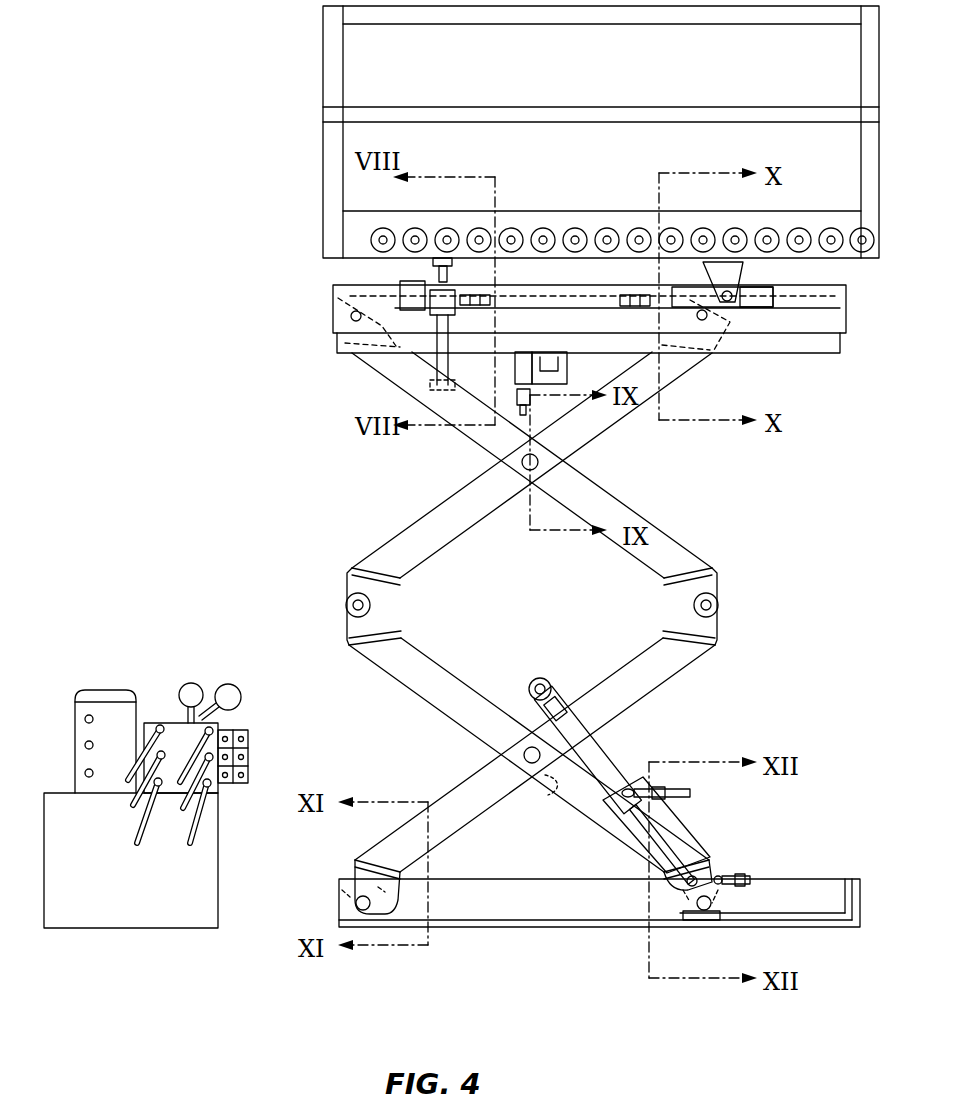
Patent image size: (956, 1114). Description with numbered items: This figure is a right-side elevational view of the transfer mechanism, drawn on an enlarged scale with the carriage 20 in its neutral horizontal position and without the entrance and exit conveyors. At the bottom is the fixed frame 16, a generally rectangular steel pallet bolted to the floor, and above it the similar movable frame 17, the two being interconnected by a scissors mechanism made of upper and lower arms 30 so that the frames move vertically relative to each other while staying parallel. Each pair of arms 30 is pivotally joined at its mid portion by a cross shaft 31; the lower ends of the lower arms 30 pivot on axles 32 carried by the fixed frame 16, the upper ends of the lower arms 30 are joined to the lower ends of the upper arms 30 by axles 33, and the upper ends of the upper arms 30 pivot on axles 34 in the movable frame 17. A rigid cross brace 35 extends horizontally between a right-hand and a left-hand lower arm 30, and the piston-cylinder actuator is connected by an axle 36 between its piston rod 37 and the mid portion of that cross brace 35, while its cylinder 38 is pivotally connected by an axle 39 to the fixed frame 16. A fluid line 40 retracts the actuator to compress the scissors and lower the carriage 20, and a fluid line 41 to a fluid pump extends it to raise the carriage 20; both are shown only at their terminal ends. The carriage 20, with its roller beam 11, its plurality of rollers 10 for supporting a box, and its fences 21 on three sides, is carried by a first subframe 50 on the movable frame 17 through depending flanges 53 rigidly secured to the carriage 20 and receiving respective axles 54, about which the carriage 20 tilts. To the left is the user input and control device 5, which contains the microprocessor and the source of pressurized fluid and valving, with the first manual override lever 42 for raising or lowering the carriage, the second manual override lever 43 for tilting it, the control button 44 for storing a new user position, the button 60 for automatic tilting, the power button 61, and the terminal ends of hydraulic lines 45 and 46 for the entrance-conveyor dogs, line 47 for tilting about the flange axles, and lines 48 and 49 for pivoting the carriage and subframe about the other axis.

The user input and control device 5 is at (46, 690).
The rollers 10 is at (546, 232).
The roller beam 11 is at (500, 212).
The fixed frame 16 is at (872, 855).
The movable frame 17 is at (838, 346).
The carriage 20 is at (883, 258).
The fences 21 is at (343, 74).
The arms 30 is at (673, 550).
The cross shaft 31 is at (548, 476).
The axles 32 is at (352, 903).
The axles 33 is at (372, 605).
The axles 34 is at (350, 316).
The cross brace 35 is at (530, 706).
The axle 36 is at (543, 683).
The piston rod 37 is at (620, 765).
The cylinder 38 is at (628, 838).
The axle 39 is at (712, 912).
The fluid line 40 is at (135, 848).
The fluid line 41 is at (740, 880).
The first manual override lever 42 is at (195, 688).
The second manual override lever 43 is at (235, 697).
The control button 44 is at (85, 719).
The pressurizing line 45 is at (200, 830).
The line 46 is at (183, 812).
The hydraulic line 47 is at (192, 750).
The hydraulic line 48 is at (130, 800).
The hydraulic line 49 is at (130, 780).
The first subframe 50 is at (378, 298).
The depending flanges 53 is at (735, 274).
The axles 54 is at (727, 302).
The button 60 is at (85, 745).
The button 61 is at (85, 773).